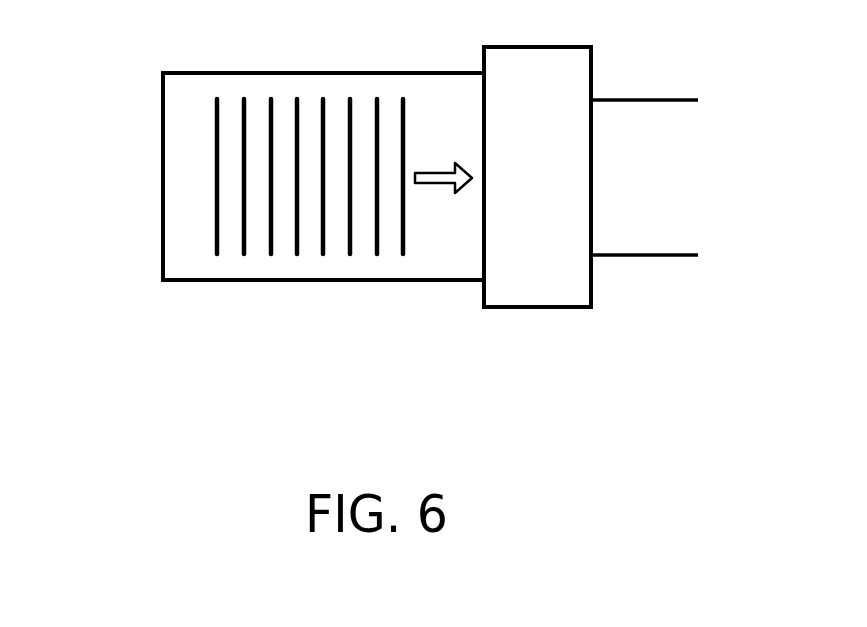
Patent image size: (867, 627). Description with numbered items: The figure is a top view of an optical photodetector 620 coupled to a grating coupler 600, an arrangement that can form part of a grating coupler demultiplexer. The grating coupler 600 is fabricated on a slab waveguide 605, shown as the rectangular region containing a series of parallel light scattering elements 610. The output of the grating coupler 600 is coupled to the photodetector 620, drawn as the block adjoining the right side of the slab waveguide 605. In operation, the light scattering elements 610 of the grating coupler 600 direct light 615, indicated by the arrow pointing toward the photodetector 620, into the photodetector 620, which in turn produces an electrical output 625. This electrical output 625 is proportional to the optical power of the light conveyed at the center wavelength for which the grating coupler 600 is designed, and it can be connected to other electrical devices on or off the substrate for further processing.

The grating coupler 600 is at (158, 371).
The slab waveguide 605 is at (257, 318).
The light scattering elements 610 is at (337, 270).
The light 615 is at (442, 178).
The photodetector 620 is at (563, 190).
The electrical output 625 is at (697, 115).